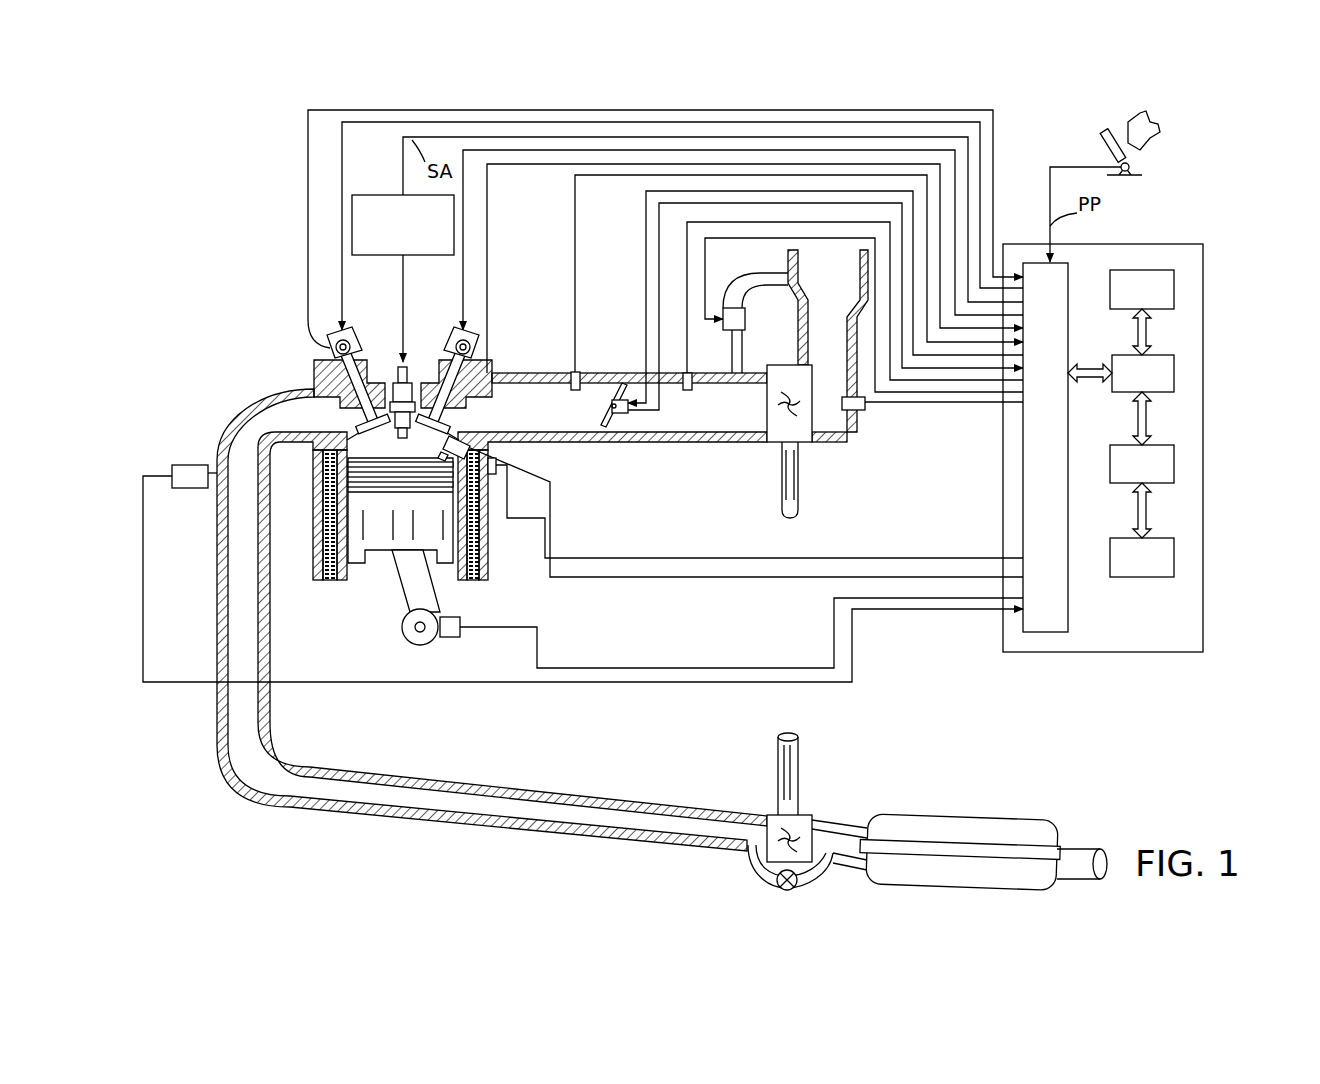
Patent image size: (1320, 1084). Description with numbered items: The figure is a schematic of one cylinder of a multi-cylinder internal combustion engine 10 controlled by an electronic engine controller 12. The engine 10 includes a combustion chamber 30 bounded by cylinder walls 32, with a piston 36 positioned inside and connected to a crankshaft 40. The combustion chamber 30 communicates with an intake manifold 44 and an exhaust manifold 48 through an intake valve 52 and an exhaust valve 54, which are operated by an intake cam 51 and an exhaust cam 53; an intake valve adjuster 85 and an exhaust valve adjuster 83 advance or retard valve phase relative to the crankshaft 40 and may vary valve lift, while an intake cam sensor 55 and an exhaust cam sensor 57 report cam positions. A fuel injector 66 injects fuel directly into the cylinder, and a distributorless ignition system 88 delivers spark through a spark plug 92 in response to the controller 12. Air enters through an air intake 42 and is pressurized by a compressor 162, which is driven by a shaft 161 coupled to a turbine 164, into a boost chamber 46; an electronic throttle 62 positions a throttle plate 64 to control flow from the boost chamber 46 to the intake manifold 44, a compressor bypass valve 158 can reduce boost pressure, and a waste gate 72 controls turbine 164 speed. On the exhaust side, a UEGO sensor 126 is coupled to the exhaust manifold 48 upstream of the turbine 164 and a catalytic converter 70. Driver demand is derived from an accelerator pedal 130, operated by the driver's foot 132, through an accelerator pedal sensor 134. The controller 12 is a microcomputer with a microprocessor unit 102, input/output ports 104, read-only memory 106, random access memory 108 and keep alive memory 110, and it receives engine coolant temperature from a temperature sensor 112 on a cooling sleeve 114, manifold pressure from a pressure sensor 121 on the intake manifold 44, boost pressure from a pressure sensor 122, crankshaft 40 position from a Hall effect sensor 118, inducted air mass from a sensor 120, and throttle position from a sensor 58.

The internal combustion engine 10 is at (255, 322).
The electronic engine controller 12 is at (1203, 250).
The combustion chamber 30 is at (372, 470).
The cylinder walls 32 is at (352, 578).
The piston 36 is at (388, 536).
The crankshaft 40 is at (413, 640).
The air intake 42 is at (828, 341).
The intake manifold 44 is at (535, 410).
The boost chamber 46 is at (700, 410).
The exhaust manifold 48 is at (282, 414).
The intake cam 51 is at (452, 335).
The intake valve 52 is at (442, 428).
The exhaust cam 53 is at (355, 335).
The exhaust valve 54 is at (357, 418).
The intake cam sensor 55 is at (470, 347).
The exhaust cam sensor 57 is at (333, 350).
The throttle position sensor 58 is at (630, 410).
The electronic throttle 62 is at (608, 385).
The throttle plate 64 is at (622, 383).
The fuel injector 66 is at (483, 446).
The catalytic converter 70 is at (867, 870).
The waste gate 72 is at (777, 880).
The exhaust valve adjuster 83 is at (351, 347).
The intake valve adjuster 85 is at (470, 352).
The distributorless ignition system 88 is at (362, 197).
The spark plug 92 is at (407, 365).
The microprocessor unit 102 is at (1174, 378).
The input/output ports 104 is at (1068, 272).
The read-only memory 106 is at (1174, 295).
The random access memory 108 is at (1174, 465).
The keep alive memory 110 is at (1174, 558).
The temperature sensor 112 is at (494, 476).
The cooling sleeve 114 is at (478, 556).
The Hall effect sensor 118 is at (458, 638).
The air mass sensor 120 is at (857, 410).
The pressure sensor 121 is at (572, 372).
The pressure sensor 122 is at (705, 360).
The Universal Exhaust Gas Oxygen sensor 126 is at (172, 470).
The accelerator pedal 130 is at (1108, 141).
The driver's foot 132 is at (1152, 131).
The accelerator pedal sensor 134 is at (1135, 171).
The compressor bypass valve 158 is at (765, 312).
The shaft 161 is at (782, 452).
The compressor 162 is at (786, 364).
The turbine 164 is at (767, 815).